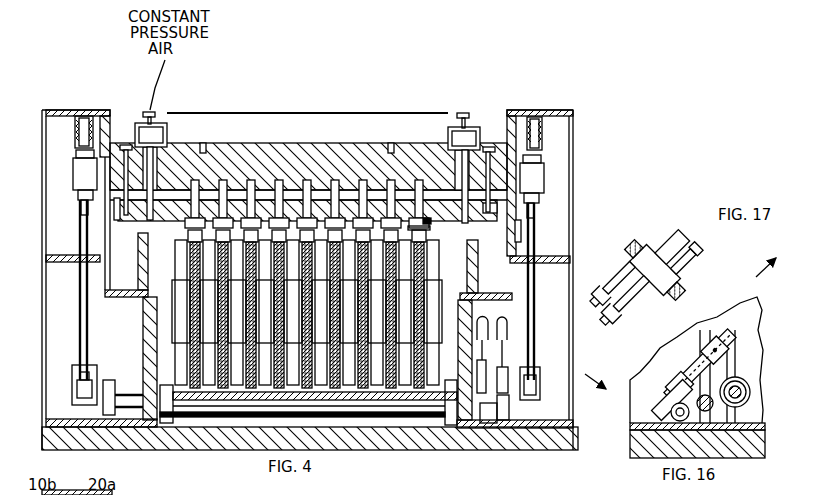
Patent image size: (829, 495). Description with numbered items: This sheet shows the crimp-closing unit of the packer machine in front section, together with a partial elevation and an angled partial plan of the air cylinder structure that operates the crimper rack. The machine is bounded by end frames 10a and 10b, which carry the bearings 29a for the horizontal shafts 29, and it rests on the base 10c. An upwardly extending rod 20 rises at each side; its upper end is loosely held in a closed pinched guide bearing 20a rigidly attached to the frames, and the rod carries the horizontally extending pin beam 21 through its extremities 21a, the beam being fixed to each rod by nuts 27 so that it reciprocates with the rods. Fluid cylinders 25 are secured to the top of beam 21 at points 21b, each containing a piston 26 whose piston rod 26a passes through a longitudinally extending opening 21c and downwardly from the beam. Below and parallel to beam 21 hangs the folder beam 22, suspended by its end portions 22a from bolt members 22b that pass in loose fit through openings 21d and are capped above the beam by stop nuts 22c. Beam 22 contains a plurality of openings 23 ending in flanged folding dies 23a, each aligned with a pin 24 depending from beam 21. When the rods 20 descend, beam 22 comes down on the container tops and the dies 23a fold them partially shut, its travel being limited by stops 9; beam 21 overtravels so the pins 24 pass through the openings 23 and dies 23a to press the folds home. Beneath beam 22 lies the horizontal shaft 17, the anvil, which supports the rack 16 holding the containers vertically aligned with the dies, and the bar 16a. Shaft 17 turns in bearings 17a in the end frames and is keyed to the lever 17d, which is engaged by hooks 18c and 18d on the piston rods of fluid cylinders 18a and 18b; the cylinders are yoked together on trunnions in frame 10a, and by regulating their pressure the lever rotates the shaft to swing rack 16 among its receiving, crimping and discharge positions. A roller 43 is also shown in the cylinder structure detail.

In FIG. 4, the stops 9 is at (138, 252).
In FIG. 4, the end frame 10a is at (576, 118).
In FIG. 16, the end frame 10a is at (765, 333).
In FIG. 4, the end frame 10b is at (43, 136).
In FIG. 4, the base 10c is at (120, 450).
In FIG. 16, the base 10c is at (766, 443).
In FIG. 4, the rack 16 is at (448, 262).
In FIG. 4, the support bar 16a is at (252, 410).
In FIG. 4, the horizontal shaft 17 is at (342, 428).
In FIG. 17, the horizontal shaft 17 is at (673, 311).
In FIG. 16, the horizontal shaft 17 is at (679, 417).
In FIG. 4, the bearings 17a is at (150, 432).
In FIG. 4, the lever 17d is at (487, 430).
In FIG. 16, the lever 17d is at (670, 412).
In FIG. 4, the fluid cylinder 18a is at (502, 323).
In FIG. 4, the fluid cylinder 18b is at (490, 322).
In FIG. 4, the hook 18c is at (503, 380).
In FIG. 4, the hook 18d is at (480, 425).
In FIG. 4, the rod 20 is at (82, 328).
In FIG. 4, the pinched guide bearing 20a is at (75, 126).
In FIG. 4, the beam member 21 is at (280, 137).
In FIG. 4, the extremities 21a is at (73, 172).
In FIG. 4, the points 21b is at (160, 160).
In FIG. 4, the opening 21c is at (204, 146).
In FIG. 4, the opening 21d is at (78, 195).
In FIG. 4, the folder beam 22 is at (474, 213).
In FIG. 4, the end portion 22a is at (114, 208).
In FIG. 4, the bolt member 22b is at (81, 206).
In FIG. 4, the stop nut 22c is at (123, 143).
In FIG. 4, the openings 23 is at (186, 222).
In FIG. 4, the folding dies 23a is at (425, 230).
In FIG. 4, the pin 24 is at (427, 220).
In FIG. 4, the fluid cylinder 25 is at (158, 120).
In FIG. 4, the piston 26 is at (153, 150).
In FIG. 4, the piston rod 26a is at (150, 128).
In FIG. 4, the nuts 27 is at (76, 154).
In FIG. 4, the horizontal shaft 29 is at (72, 396).
In FIG. 16, the horizontal shaft 29 is at (713, 405).
In FIG. 4, the bearing 29a is at (110, 380).
In FIG. 16, the roller 43 is at (748, 389).